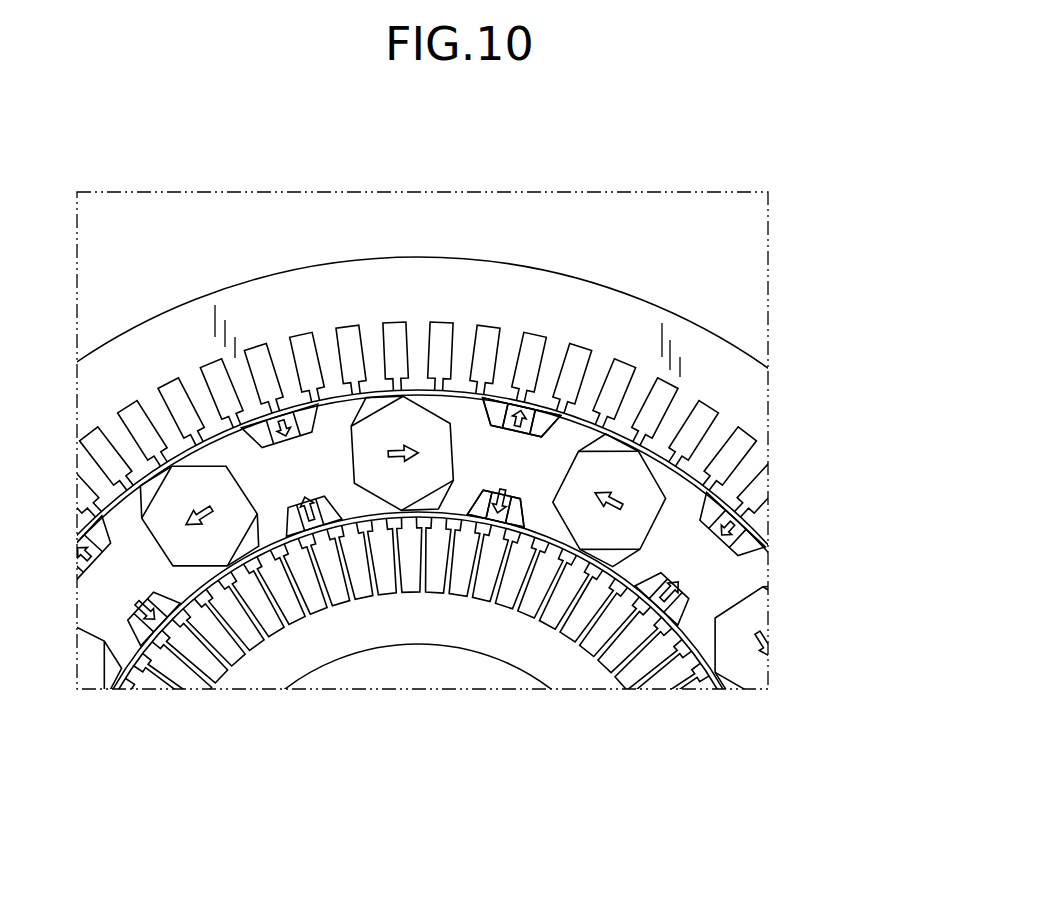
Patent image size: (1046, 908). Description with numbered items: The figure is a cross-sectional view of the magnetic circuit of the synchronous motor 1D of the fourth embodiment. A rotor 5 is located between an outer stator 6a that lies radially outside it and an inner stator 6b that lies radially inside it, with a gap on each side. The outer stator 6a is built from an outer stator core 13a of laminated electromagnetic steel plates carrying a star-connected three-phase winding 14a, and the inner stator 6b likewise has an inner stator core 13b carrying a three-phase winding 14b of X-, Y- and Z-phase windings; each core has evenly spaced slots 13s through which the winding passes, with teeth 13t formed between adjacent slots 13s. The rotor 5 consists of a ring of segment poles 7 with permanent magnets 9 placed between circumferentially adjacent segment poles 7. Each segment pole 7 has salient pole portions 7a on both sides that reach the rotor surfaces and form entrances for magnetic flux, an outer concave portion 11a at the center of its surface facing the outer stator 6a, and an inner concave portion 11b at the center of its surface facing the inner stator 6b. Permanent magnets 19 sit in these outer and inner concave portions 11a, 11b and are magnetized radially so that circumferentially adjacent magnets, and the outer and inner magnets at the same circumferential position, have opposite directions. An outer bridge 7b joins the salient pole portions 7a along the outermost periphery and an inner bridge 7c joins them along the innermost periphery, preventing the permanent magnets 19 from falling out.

The synchronous motor 1D is at (745, 129).
The rotor 5 is at (773, 545).
The outer stator 6a is at (290, 132).
The inner stator 6b is at (320, 755).
The segment pole 7 is at (287, 470).
The salient pole portion 7a is at (448, 408).
The outer bridge 7b is at (547, 413).
The inner bridge 7c is at (492, 508).
The permanent magnet 9 is at (390, 485).
The outer concave portion 11a is at (475, 403).
The inner concave portion 11b is at (462, 515).
The outer stator core 13a is at (245, 305).
The inner stator core 13b is at (290, 660).
The slot 13s is at (736, 442).
The tooth 13t is at (673, 423).
The three-phase winding 14a is at (305, 342).
The three-phase winding 14b is at (247, 633).
The permanent magnet 19 is at (483, 405).